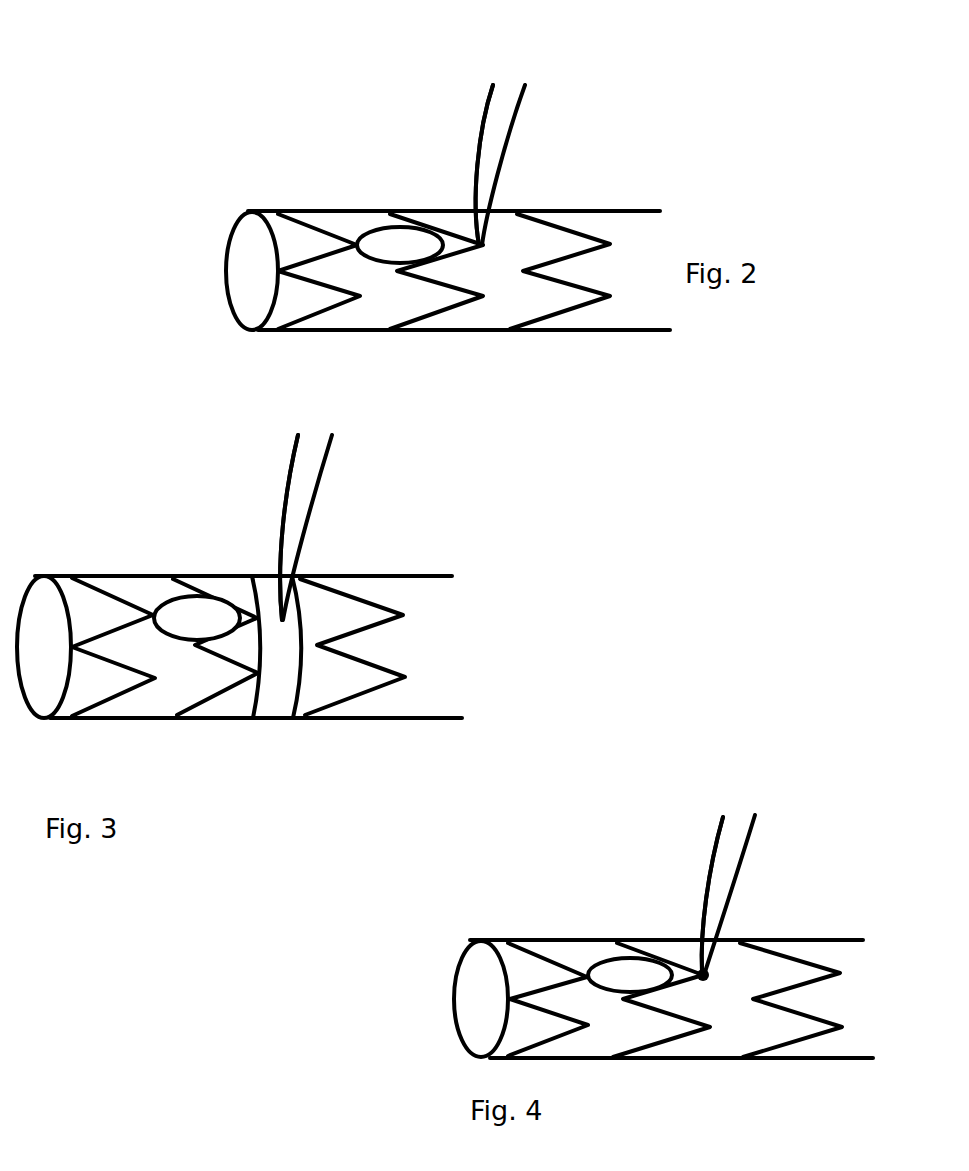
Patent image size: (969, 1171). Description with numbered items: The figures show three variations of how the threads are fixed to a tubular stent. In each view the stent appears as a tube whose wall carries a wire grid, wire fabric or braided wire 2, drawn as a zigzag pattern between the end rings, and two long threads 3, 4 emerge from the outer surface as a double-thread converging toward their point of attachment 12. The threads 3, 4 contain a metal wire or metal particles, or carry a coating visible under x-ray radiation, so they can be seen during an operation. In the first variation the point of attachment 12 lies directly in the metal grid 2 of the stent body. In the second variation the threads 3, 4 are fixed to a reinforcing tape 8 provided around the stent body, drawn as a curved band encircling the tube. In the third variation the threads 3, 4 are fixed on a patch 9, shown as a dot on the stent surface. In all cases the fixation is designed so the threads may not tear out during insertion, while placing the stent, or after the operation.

In FIG. 2, the wire grid 2 is at (443, 308).
In FIG. 2, the thread 3 is at (517, 127).
In FIG. 3, the thread 3 is at (317, 485).
In FIG. 4, the thread 3 is at (740, 858).
In FIG. 2, the thread 4 is at (480, 127).
In FIG. 3, the thread 4 is at (287, 483).
In FIG. 4, the thread 4 is at (710, 857).
In FIG. 3, the reinforcing tape 8 is at (280, 682).
In FIG. 4, the patch 9 is at (703, 975).
In FIG. 2, the point of attachment 12 is at (475, 243).
In FIG. 3, the point of attachment 12 is at (280, 618).
In FIG. 4, the point of attachment 12 is at (630, 975).